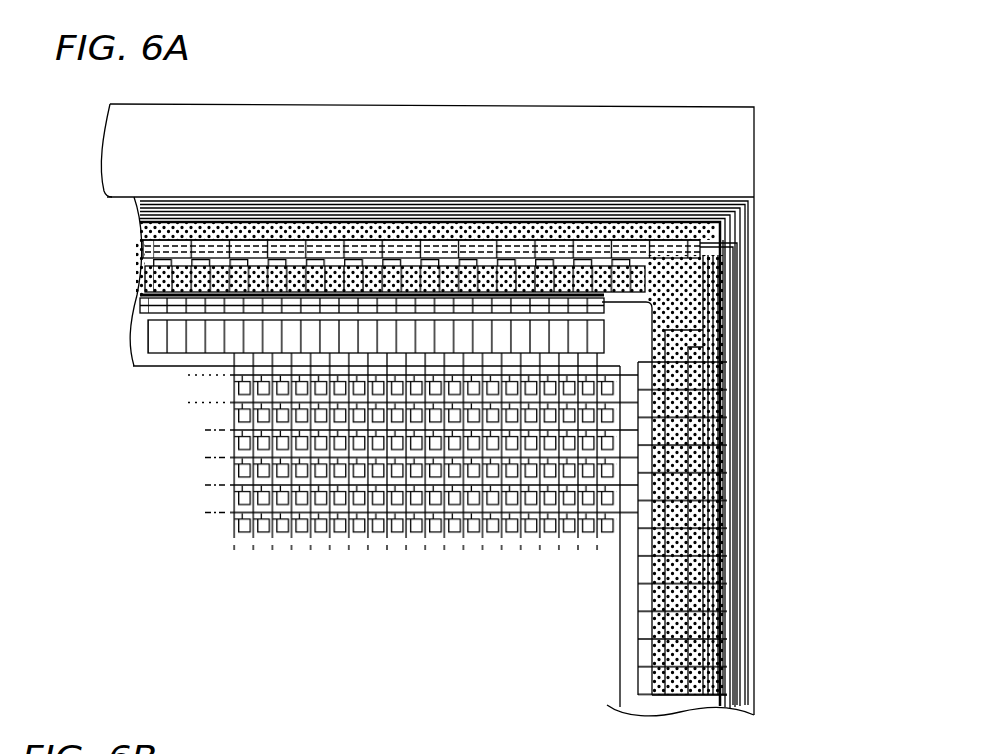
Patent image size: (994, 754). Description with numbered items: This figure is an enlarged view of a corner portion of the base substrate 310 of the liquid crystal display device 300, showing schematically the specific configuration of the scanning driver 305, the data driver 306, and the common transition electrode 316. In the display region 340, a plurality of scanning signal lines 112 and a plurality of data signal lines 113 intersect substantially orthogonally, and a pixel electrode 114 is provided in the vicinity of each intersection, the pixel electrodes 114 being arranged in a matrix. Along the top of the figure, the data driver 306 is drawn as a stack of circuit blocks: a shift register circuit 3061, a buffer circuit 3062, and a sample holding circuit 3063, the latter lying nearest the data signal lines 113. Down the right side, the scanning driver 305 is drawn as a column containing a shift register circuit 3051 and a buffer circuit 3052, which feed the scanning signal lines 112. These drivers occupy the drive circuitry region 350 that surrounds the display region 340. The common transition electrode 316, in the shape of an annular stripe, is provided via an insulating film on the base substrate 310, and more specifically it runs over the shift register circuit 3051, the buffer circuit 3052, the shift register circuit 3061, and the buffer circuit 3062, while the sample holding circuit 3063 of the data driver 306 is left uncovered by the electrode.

The liquid crystal display device 300 is at (757, 64).
The base substrate 310 is at (762, 142).
The common transition electrode 316 is at (668, 222).
The drive circuitry region 350 is at (703, 288).
The data driver 306 is at (120, 238).
The shift register circuit 3061 is at (277, 250).
The buffer circuit 3062 is at (332, 285).
The sample holding circuit 3063 is at (522, 328).
The pixel region 340 is at (255, 587).
The scanning signal lines 112 is at (207, 458).
The data signal lines 113 is at (345, 557).
The pixel electrode 114 is at (418, 527).
The scanning driver 305 is at (542, 584).
The shift register circuit 3051 is at (711, 597).
The buffer circuit 3052 is at (666, 628).